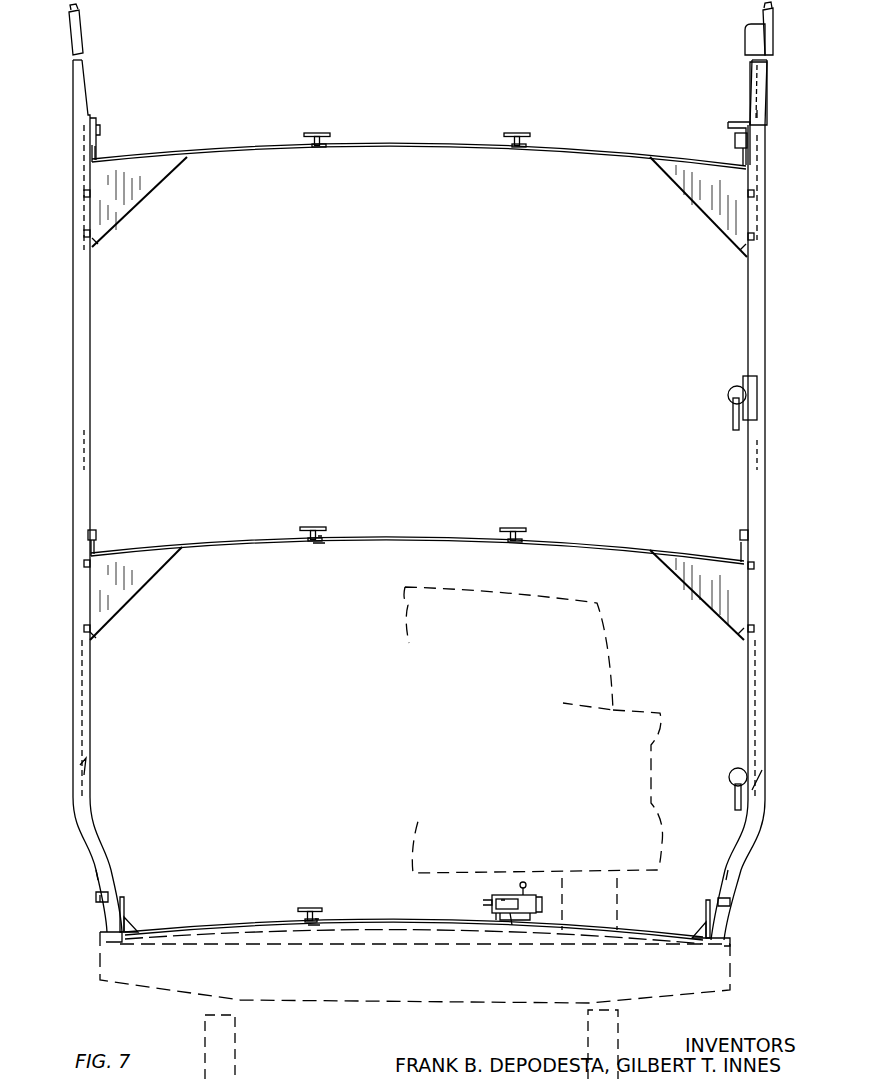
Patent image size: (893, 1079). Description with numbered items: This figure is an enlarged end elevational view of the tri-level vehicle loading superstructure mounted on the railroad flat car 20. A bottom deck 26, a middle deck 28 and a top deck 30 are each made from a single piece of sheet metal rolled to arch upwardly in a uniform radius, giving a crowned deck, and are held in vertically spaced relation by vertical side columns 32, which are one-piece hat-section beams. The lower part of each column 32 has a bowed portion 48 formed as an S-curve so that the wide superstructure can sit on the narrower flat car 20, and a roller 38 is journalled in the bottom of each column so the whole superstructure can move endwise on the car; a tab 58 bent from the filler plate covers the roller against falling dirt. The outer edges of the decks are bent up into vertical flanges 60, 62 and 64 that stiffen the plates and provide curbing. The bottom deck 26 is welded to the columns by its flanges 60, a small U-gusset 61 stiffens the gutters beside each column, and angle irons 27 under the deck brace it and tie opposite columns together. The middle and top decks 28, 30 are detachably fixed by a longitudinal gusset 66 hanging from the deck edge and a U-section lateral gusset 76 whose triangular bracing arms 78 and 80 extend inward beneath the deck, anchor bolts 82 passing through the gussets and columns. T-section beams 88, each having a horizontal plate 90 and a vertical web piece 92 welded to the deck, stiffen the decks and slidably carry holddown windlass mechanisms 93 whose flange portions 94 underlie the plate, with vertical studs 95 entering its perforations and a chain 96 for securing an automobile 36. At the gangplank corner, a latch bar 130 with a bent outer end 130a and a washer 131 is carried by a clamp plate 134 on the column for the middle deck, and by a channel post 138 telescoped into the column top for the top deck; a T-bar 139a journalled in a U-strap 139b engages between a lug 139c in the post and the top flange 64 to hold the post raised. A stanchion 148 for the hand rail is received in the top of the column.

The railroad flat car 20 is at (152, 982).
The bottom deck 26 is at (206, 920).
The angle irons 27 is at (286, 938).
The middle deck 28 is at (245, 537).
The top deck 30 is at (238, 145).
The vertical side columns 32 is at (73, 452).
The automobiles 36 is at (608, 670).
The rollers 38 is at (108, 936).
The bowed portion 48 is at (95, 865).
The tab 58 is at (88, 760).
The vertical flanges of bottom deck 60 is at (124, 912).
The U-gusset 61 is at (128, 926).
The vertical flanges of middle deck 62 is at (96, 537).
The vertical flanges of top deck 64 is at (97, 144).
The longitudinal gusset 66 is at (92, 243).
The lateral gusset 76 is at (128, 217).
The lateral bracing arm 78 is at (688, 188).
The lateral bracing arm 80 is at (152, 180).
The anchor bolts 82 is at (84, 232).
The T-section beams 88 is at (320, 132).
The horizontal plate 90 is at (320, 535).
The vertical web piece 92 is at (322, 540).
The holddown windlass mechanisms 93 is at (490, 897).
The flange portions 94 is at (497, 915).
The vertical studs 95 is at (513, 920).
The chain 96 is at (526, 882).
The latch bar 130 is at (745, 42).
The outer end of latch bar 130a is at (733, 412).
The washer 131 is at (733, 388).
The clamp plate 134 is at (758, 410).
The channel post 138 is at (752, 76).
The T-bar 139a is at (740, 123).
The U-strap 139b is at (735, 140).
The lug 139c is at (766, 108).
The stanchion 148 is at (83, 46).